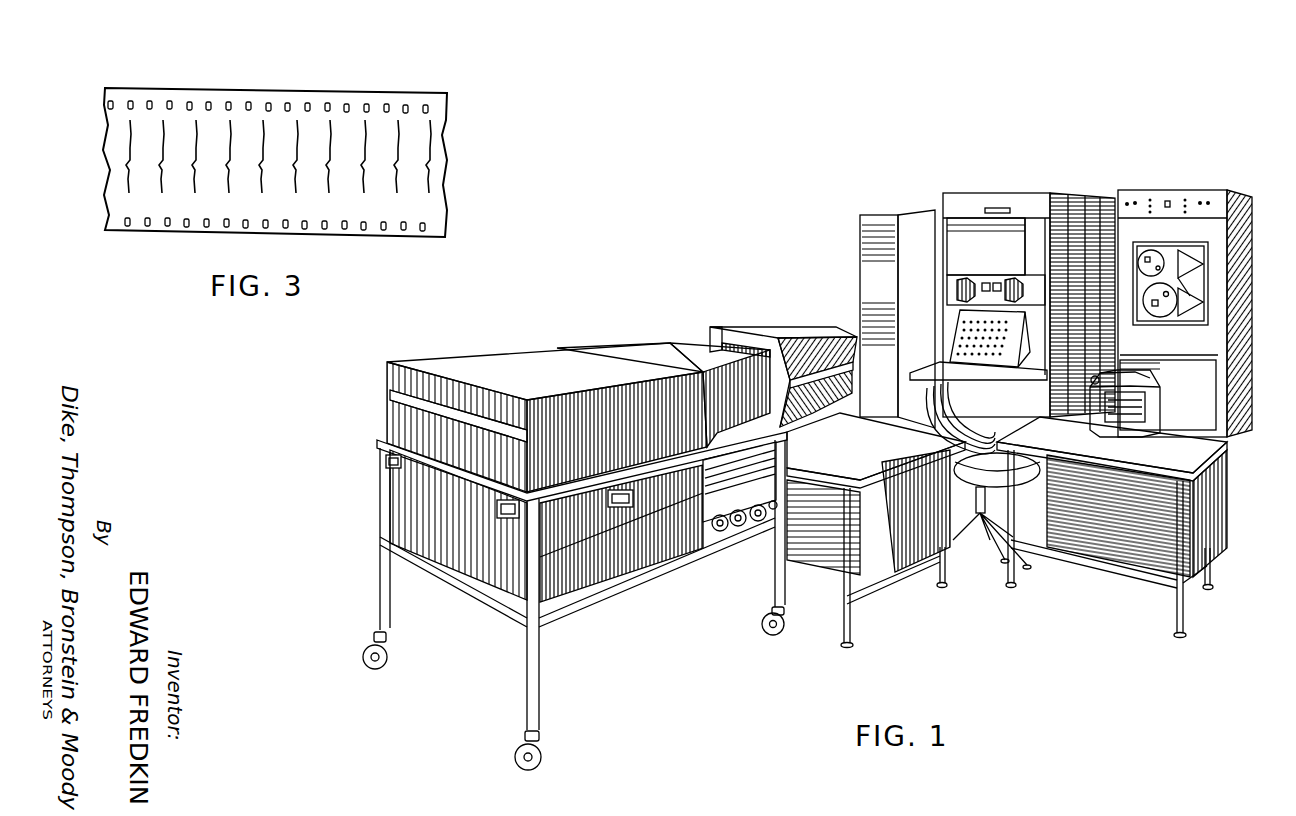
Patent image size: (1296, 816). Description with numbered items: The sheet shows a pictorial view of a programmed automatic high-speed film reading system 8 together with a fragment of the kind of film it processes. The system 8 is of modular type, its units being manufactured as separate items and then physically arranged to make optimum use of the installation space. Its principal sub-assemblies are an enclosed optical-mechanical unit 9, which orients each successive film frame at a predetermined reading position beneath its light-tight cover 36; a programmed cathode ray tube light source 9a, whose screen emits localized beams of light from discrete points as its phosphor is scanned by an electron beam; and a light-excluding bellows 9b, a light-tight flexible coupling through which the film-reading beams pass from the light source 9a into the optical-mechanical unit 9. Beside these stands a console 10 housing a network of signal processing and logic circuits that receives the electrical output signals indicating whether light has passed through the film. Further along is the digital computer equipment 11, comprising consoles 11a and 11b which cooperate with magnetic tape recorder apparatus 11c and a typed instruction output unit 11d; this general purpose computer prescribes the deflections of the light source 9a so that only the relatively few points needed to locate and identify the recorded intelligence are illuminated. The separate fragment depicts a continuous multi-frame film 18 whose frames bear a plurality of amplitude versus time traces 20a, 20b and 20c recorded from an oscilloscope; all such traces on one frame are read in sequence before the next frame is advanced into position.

In FIG. 1, the programmed automatic high-speed film reading system 8 is at (738, 240).
In FIG. 1, the optical-mechanical unit 9 is at (534, 361).
In FIG. 1, the programmed cathode ray tube light source 9a is at (774, 327).
In FIG. 1, the light-excluding bellows 9b is at (722, 345).
In FIG. 1, the light-tight cover 36 is at (638, 357).
In FIG. 1, the console 10 is at (887, 222).
In FIG. 1, the digital computer equipment 11 is at (1100, 284).
In FIG. 1, the console 11a is at (1015, 192).
In FIG. 1, the console 11b is at (1170, 200).
In FIG. 1, the magnetic tape recorder apparatus 11c is at (1199, 286).
In FIG. 1, the typed instruction output unit 11d is at (1152, 404).
In FIG. 3, the multi-frame film 18 is at (443, 181).
In FIG. 3, the trace 20a is at (131, 119).
In FIG. 3, the trace 20b is at (162, 119).
In FIG. 3, the trace 20c is at (197, 119).